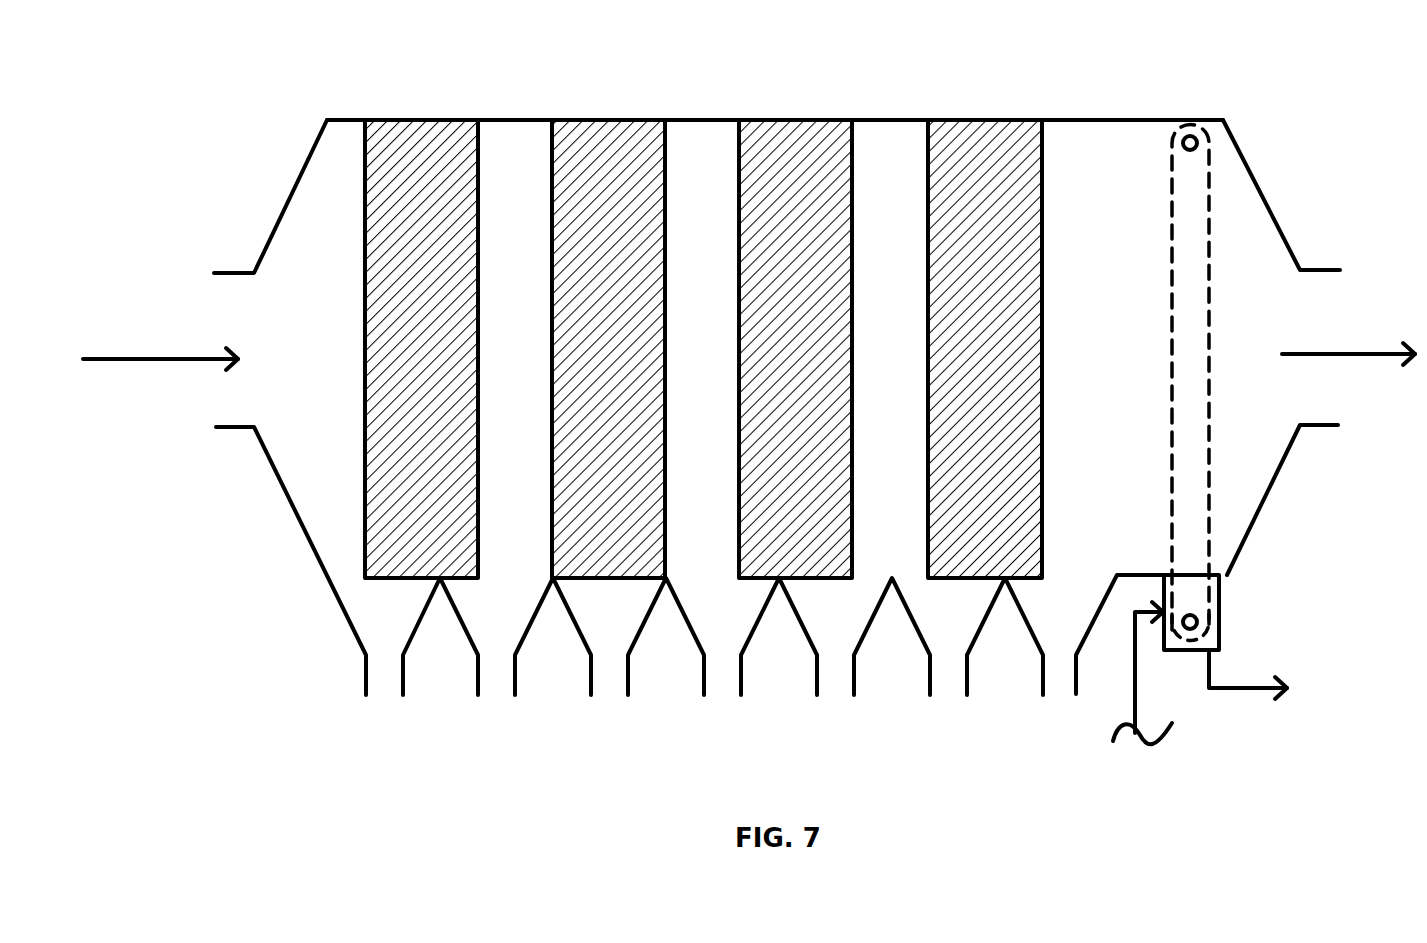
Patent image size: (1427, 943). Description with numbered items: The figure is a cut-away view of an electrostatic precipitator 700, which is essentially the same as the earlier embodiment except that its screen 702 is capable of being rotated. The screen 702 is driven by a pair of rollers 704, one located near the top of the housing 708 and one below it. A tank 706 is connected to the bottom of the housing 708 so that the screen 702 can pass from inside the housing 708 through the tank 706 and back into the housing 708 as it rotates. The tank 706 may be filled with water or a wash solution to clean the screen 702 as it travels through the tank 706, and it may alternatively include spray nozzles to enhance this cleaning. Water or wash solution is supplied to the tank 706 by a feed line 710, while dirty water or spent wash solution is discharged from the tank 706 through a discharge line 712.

The electrostatic precipitator 700 is at (453, 768).
The screen 702 is at (1210, 167).
The rollers 704 is at (1208, 146).
The tank 706 is at (1220, 622).
The housing 708 is at (517, 120).
The feed line 710 is at (1132, 680).
The discharge line 712 is at (1237, 693).